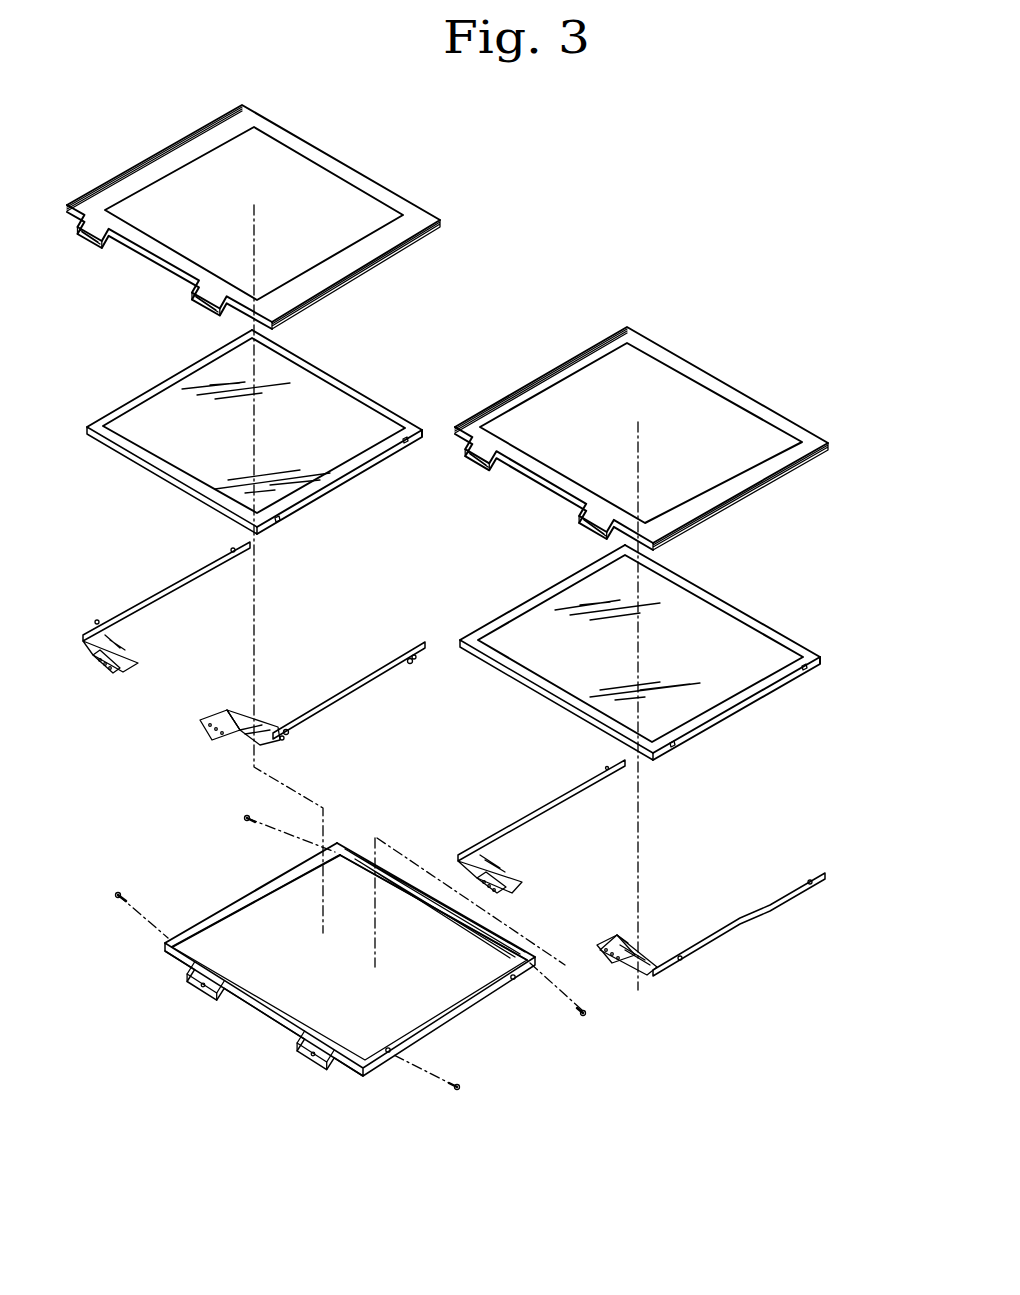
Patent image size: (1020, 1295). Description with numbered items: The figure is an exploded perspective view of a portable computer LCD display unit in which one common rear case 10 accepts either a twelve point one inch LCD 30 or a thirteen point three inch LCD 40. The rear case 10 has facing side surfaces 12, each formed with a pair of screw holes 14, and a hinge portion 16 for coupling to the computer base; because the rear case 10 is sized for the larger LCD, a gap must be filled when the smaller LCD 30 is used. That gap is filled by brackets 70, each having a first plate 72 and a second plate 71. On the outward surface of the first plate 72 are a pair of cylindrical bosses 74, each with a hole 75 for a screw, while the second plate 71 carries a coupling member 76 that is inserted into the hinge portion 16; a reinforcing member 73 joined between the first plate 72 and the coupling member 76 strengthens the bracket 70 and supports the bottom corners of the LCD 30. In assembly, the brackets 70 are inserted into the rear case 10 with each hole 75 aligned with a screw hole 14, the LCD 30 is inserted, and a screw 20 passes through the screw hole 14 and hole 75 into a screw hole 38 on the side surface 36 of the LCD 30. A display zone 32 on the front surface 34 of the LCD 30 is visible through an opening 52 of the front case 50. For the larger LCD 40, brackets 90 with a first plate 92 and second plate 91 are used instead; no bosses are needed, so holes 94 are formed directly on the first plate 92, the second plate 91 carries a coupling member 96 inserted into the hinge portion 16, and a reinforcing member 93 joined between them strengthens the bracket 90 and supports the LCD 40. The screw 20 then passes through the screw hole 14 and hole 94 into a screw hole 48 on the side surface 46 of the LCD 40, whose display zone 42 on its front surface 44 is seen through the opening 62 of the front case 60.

The rear case 10 is at (350, 980).
The side surface 12 is at (440, 1000).
The screw hole 14 is at (389, 1054).
The hinge portion 16 is at (203, 993).
The screw 20 is at (583, 1016).
The 12.1 inch LCD 30 is at (262, 453).
The display zone 32 is at (203, 439).
The front surface 34 is at (378, 403).
The side surface 36 is at (320, 494).
The screw hole 38 is at (407, 444).
The 13.3 inch LCD 40 is at (659, 659).
The display zone 42 is at (560, 662).
The front surface 44 is at (767, 630).
The side surface 46 is at (754, 703).
The screw hole 48 is at (808, 670).
The front case 50 is at (267, 217).
The opening 52 is at (186, 211).
The front case 60 is at (644, 442).
The opening 62 is at (560, 425).
The bracket 70 is at (326, 715).
The second plate 71 is at (242, 750).
The first plate 72 is at (352, 702).
The reinforcing member 73 is at (240, 712).
The boss 74 is at (413, 660).
The hole 75 is at (414, 663).
The coupling member 76 is at (212, 737).
The bracket 90 is at (723, 950).
The second plate 91 is at (632, 972).
The first plate 92 is at (762, 915).
The reinforcing member 93 is at (648, 945).
The hole 94 is at (812, 885).
The coupling member 96 is at (607, 958).